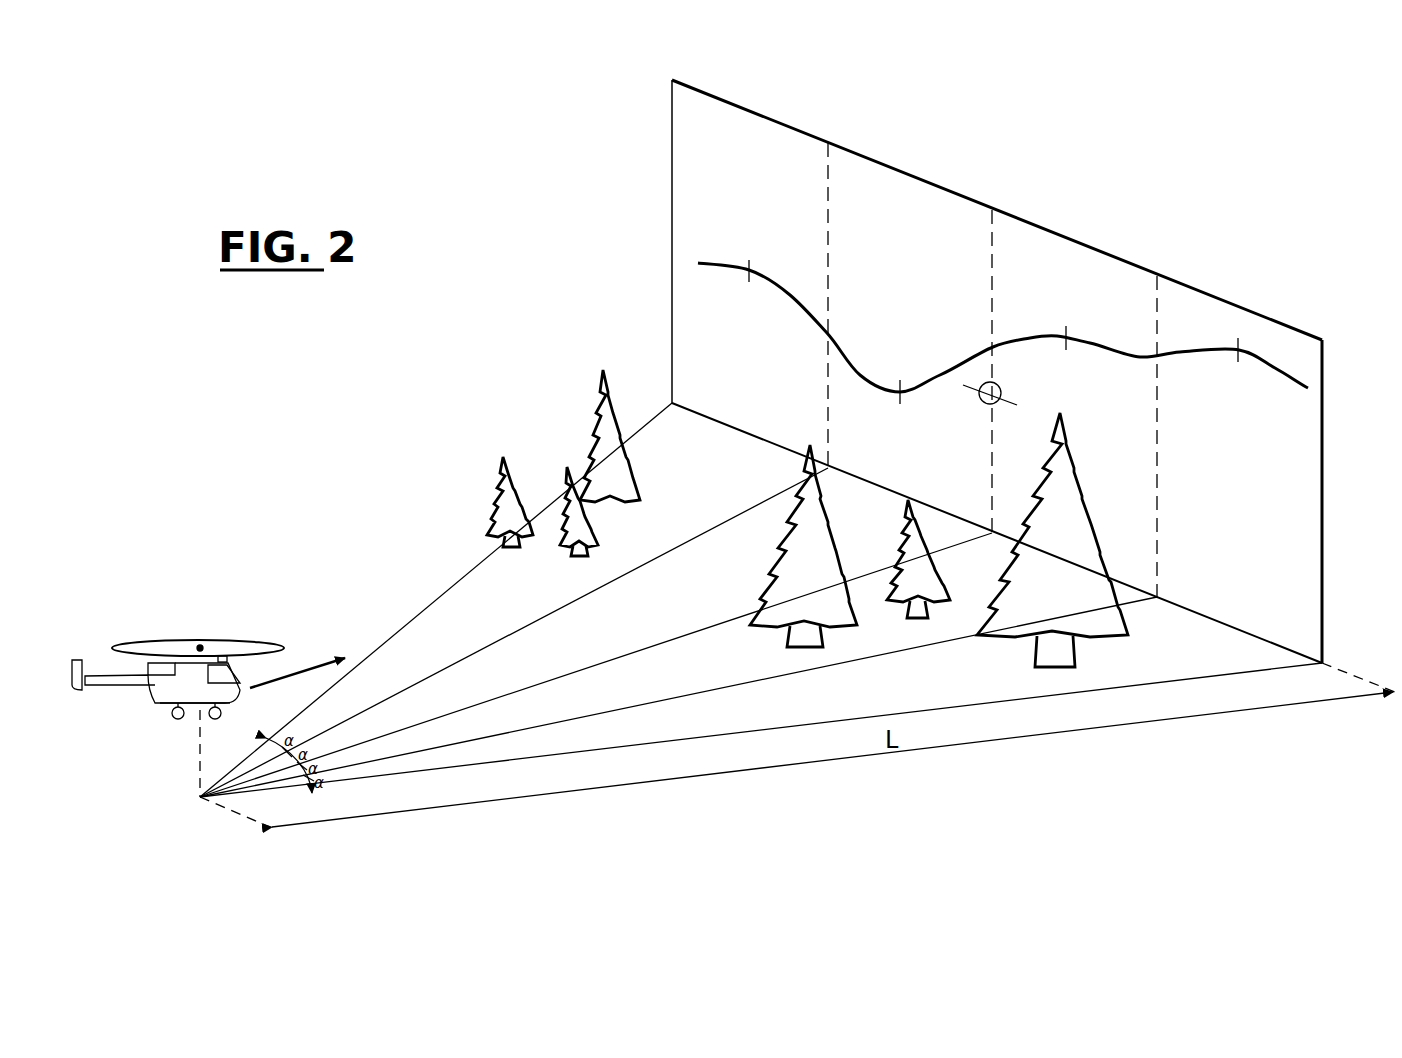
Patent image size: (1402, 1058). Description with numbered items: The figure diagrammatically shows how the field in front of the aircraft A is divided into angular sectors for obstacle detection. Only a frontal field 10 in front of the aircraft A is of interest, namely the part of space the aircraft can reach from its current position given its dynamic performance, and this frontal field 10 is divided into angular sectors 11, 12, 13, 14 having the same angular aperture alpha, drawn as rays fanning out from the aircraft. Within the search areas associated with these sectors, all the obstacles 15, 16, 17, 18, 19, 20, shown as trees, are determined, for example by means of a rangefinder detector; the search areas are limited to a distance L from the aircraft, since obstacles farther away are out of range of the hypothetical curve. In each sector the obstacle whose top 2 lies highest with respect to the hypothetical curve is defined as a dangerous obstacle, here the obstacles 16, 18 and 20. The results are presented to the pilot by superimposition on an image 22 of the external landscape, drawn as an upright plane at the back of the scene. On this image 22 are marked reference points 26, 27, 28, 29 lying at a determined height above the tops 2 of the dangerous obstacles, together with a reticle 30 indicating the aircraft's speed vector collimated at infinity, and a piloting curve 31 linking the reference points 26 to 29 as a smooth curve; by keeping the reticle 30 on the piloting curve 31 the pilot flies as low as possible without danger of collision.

The top 2 is at (563, 465).
The frontal field 10 is at (467, 632).
The angular sector 11 is at (412, 655).
The angular sector 12 is at (400, 708).
The angular sector 13 is at (472, 720).
The angular sector 14 is at (550, 733).
The obstacle 15 is at (498, 500).
The dangerous obstacle 16 is at (580, 450).
The obstacle 17 is at (575, 522).
The dangerous obstacle 18 is at (775, 542).
The obstacle 19 is at (900, 540).
The dangerous obstacle 20 is at (1098, 567).
The image of the external landscape 22 is at (676, 153).
The reference point 26 is at (747, 268).
The reference point 27 is at (897, 390).
The reference point 28 is at (1064, 337).
The reference point 29 is at (1237, 351).
The reticle 30 is at (980, 396).
The piloting curve 31 is at (785, 290).
The aircraft A is at (180, 687).